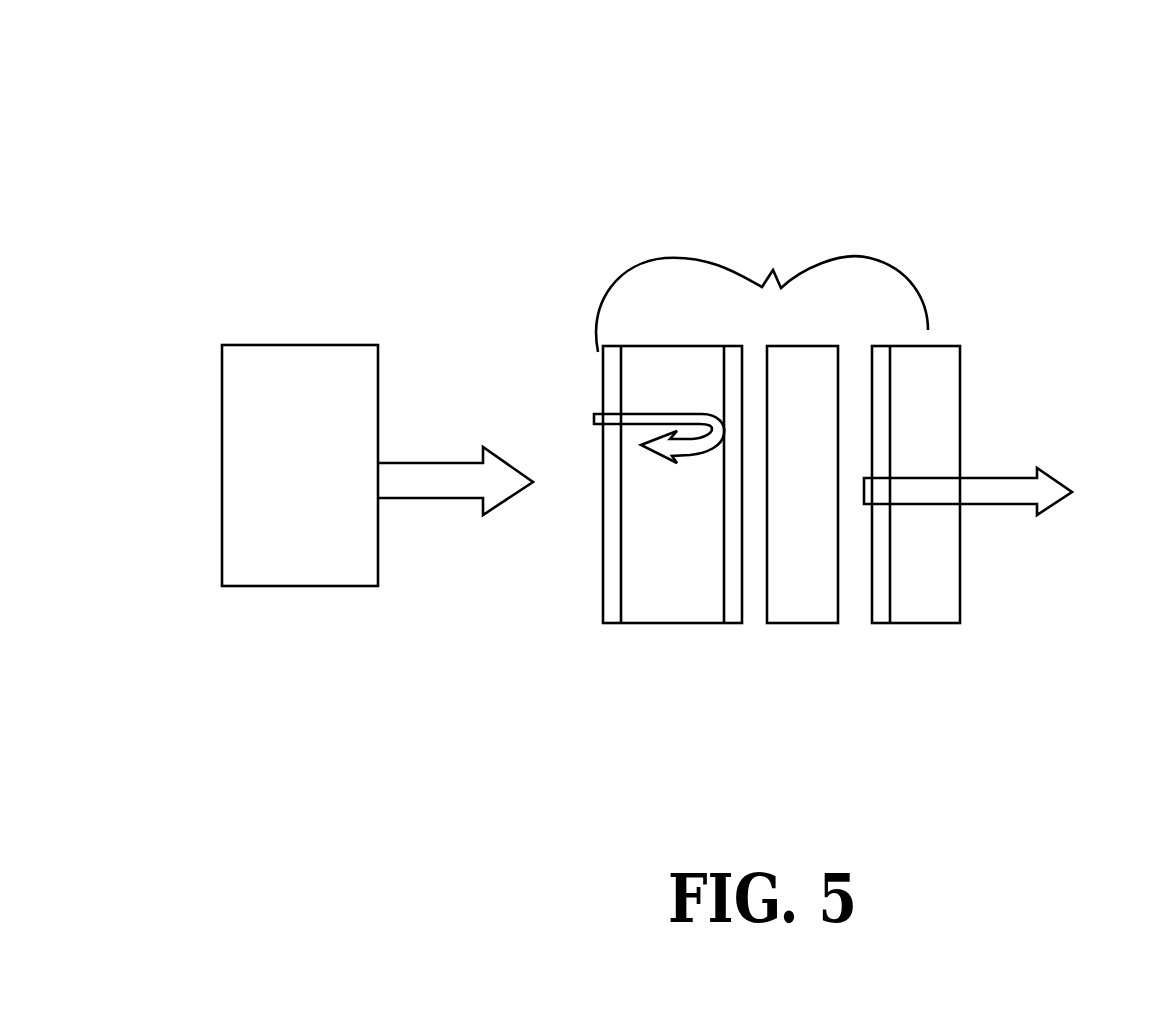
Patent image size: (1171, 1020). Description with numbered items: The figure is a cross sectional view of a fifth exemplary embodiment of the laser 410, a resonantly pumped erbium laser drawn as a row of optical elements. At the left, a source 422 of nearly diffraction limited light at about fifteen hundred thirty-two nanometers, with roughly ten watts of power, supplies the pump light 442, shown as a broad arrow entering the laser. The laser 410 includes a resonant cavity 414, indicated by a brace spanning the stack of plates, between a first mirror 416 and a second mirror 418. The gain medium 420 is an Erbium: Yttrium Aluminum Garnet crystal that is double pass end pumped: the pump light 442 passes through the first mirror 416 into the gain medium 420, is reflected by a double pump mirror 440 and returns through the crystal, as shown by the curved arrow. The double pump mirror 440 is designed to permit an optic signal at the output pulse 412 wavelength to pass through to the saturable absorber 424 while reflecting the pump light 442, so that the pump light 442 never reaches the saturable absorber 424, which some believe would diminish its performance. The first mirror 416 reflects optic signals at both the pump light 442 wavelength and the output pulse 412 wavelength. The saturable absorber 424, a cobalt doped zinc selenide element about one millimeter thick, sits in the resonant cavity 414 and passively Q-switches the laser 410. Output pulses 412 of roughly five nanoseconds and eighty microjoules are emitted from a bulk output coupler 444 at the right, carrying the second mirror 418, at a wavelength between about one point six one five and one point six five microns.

The laser 410 is at (522, 198).
The output pulse 412 is at (1055, 470).
The resonant cavity 414 is at (762, 297).
The first mirror 416 is at (600, 351).
The second mirror 418 is at (938, 342).
The gain medium 420 is at (659, 626).
The source 422 is at (298, 588).
The saturable absorber 424 is at (816, 627).
The double pump mirror 440 is at (734, 627).
The pump light 442 is at (638, 409).
The bulk output coupler 444 is at (965, 607).